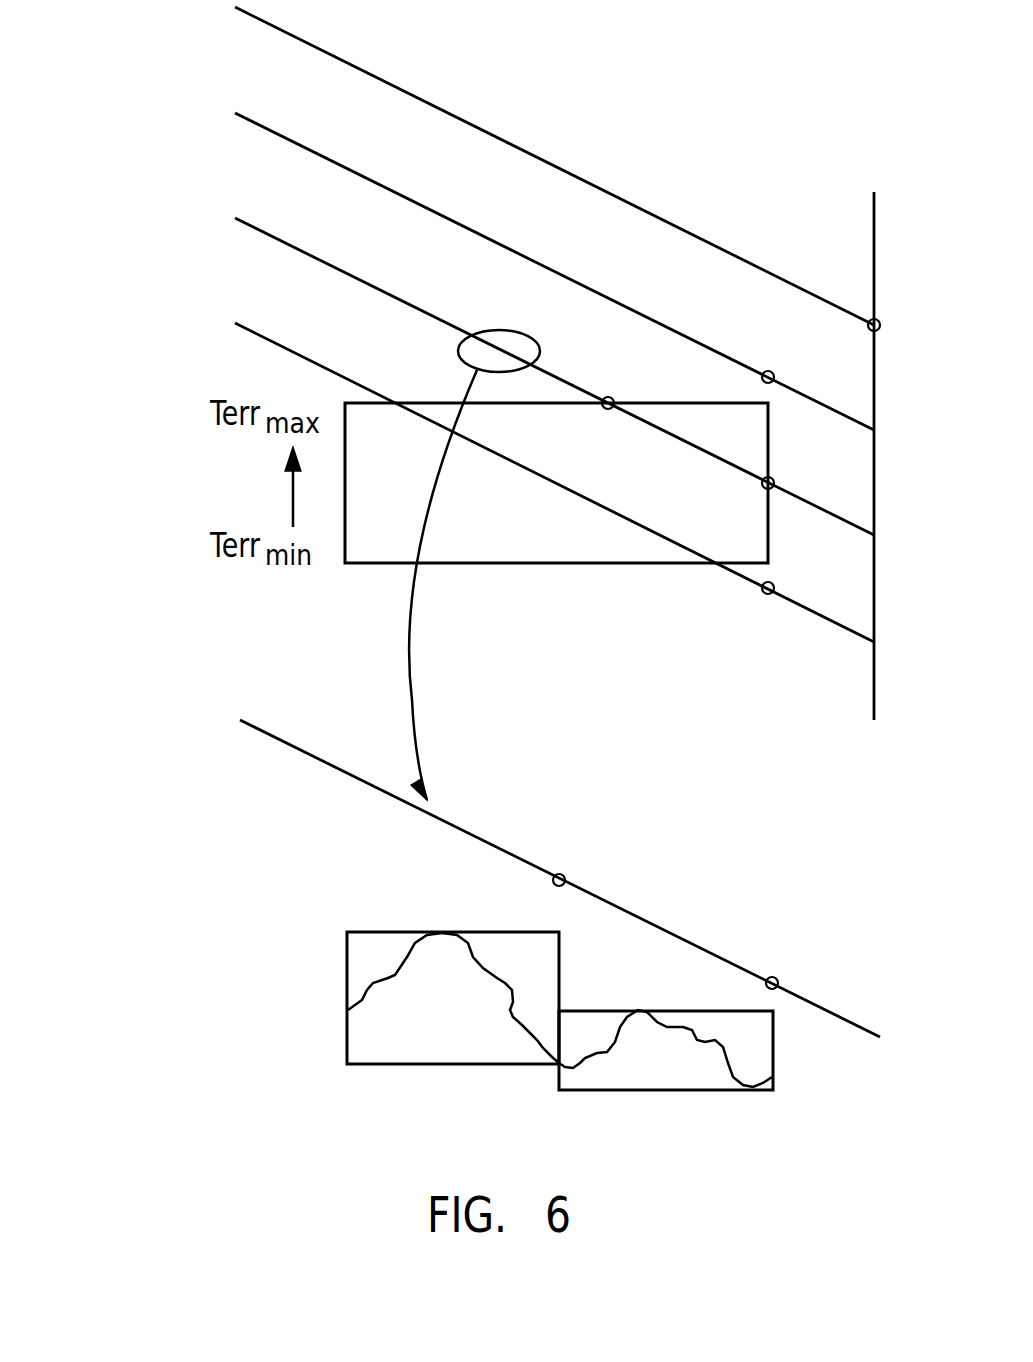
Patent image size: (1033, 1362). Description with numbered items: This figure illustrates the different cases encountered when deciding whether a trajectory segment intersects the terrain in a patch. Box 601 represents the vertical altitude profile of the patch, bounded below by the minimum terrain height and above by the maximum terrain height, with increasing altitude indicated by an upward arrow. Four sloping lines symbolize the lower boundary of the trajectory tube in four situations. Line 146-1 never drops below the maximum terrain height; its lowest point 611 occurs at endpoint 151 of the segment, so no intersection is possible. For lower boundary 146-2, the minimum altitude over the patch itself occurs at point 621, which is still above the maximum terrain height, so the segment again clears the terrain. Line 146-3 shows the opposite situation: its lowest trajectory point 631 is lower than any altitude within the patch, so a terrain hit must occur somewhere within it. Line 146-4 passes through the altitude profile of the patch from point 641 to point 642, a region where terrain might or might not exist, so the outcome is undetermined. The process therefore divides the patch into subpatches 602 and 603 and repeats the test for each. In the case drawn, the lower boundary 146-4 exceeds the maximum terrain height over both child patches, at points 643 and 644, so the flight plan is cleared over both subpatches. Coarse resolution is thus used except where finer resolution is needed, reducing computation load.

The lower boundary line 146-1 is at (267, 23).
The lower boundary line 146-2 is at (267, 128).
The lower boundary line 146-3 is at (267, 338).
The lower boundary line 146-4 is at (267, 233).
The endpoint 151 is at (874, 206).
The lowest point 611 is at (868, 333).
The minimum altitude point 621 is at (773, 382).
The lowest trajectory point 631 is at (773, 593).
The entry point 641 is at (612, 397).
The exit point 642 is at (773, 488).
The clearance point 643 is at (562, 873).
The clearance point 644 is at (775, 976).
The vertical profile box 601 is at (640, 563).
The first subpatch 602 is at (478, 1064).
The second subpatch 603 is at (698, 1090).